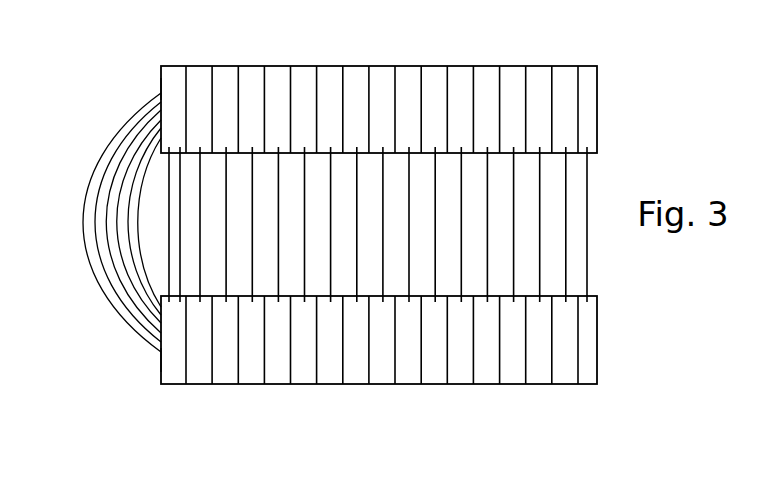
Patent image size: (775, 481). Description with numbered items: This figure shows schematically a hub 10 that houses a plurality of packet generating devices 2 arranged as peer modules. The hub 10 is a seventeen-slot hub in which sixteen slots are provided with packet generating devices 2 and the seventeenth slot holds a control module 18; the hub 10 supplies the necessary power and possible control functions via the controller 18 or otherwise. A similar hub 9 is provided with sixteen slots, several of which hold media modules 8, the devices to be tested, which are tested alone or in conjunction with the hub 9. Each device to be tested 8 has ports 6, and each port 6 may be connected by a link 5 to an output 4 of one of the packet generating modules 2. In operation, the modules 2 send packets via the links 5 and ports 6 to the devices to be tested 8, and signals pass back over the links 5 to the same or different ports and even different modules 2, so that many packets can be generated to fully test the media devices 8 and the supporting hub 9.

The packet generator 2 is at (176, 72).
The connection port 4 is at (162, 85).
The link 5 is at (87, 216).
The port 6 is at (160, 353).
The device to be tested 8 is at (280, 376).
The hub 9 is at (598, 328).
The hub 10 is at (588, 66).
The control module 18 is at (598, 89).